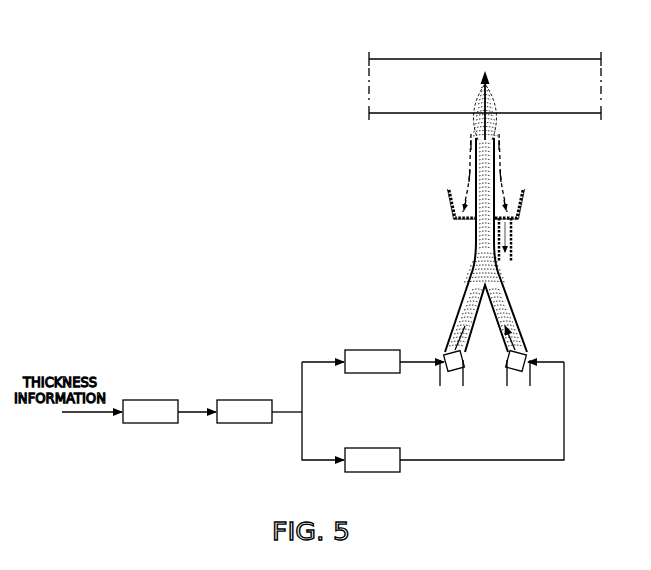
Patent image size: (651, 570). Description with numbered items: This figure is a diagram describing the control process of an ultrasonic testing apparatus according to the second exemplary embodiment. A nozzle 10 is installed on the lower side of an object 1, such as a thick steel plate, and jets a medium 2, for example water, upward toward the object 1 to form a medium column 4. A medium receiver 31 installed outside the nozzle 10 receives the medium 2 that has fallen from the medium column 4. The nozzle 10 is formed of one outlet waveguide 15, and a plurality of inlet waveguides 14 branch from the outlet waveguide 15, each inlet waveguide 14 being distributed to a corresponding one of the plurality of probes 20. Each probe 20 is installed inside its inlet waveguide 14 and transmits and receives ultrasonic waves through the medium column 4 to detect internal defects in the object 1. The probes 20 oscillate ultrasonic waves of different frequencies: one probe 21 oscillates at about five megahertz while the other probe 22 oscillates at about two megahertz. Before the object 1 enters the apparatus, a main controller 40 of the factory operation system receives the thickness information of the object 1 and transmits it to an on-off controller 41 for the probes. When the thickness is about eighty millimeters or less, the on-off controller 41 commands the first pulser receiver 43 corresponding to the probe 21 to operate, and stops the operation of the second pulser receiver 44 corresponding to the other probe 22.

The object 1 is at (416, 76).
The medium 2 is at (500, 164).
The medium column 4 is at (470, 164).
The nozzle 10 is at (416, 237).
The inlet waveguide 14 is at (504, 303).
The outlet waveguide 15 is at (475, 232).
The probe 20 is at (564, 324).
The probe 21 is at (446, 354).
The probe 22 is at (524, 354).
The medium receiver 31 is at (515, 205).
The main controller 40 is at (163, 400).
The on-off controller 41 is at (257, 400).
The first pulser receiver 43 is at (385, 350).
The second pulser receiver 44 is at (385, 448).